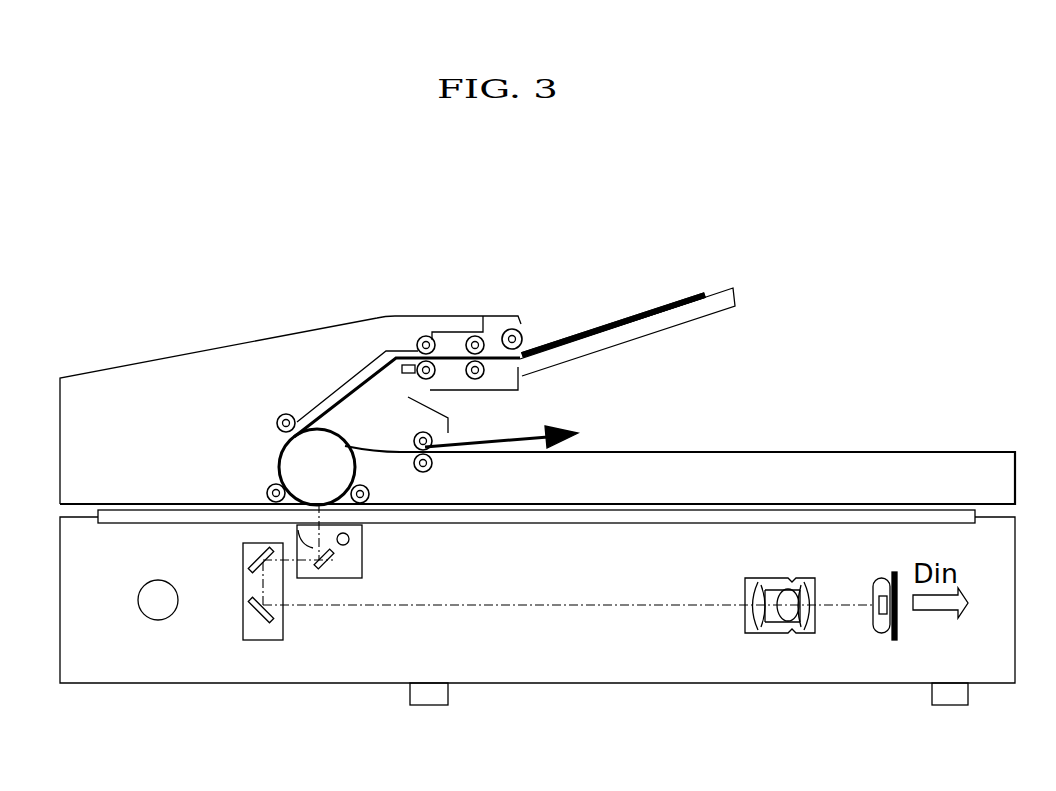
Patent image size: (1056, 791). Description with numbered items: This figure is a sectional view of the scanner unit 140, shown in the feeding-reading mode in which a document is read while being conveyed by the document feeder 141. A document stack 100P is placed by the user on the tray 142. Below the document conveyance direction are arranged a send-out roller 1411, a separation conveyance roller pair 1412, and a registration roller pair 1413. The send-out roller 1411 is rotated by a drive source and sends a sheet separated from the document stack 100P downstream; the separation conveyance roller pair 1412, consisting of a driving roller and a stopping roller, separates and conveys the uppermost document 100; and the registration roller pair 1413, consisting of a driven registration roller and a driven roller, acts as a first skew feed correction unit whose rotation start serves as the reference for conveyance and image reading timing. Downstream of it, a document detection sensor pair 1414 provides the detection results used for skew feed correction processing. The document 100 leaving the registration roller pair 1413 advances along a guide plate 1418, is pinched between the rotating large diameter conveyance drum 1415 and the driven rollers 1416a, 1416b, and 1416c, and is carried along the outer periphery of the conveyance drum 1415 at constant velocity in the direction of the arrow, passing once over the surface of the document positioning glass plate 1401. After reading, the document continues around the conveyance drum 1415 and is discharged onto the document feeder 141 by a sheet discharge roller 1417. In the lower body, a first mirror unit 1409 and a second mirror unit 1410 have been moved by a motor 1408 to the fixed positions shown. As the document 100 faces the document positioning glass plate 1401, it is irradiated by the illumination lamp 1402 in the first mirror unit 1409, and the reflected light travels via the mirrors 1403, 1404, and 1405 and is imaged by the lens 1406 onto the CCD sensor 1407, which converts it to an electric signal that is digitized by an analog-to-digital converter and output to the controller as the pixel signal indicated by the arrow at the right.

The document 100 is at (622, 319).
The document stack 100P is at (705, 293).
The scanner unit 140 is at (147, 684).
The document feeder 141 is at (713, 451).
The tray 142 is at (738, 297).
The document positioning glass plate 1401 is at (122, 509).
The illumination lamp 1402 is at (350, 539).
The mirror 1403 is at (333, 558).
The mirror 1404 is at (250, 556).
The mirror 1405 is at (282, 621).
The lens 1406 is at (777, 637).
The CCD sensor 1407 is at (900, 637).
The motor 1408 is at (158, 620).
The first mirror unit 1409 is at (338, 578).
The second mirror unit 1410 is at (272, 641).
The send-out roller 1411 is at (520, 333).
The separation conveyance roller pair 1412 is at (474, 336).
The registration roller pair 1413 is at (424, 336).
The document detection sensor pair 1414 is at (402, 372).
The conveyance drum 1415 is at (282, 454).
The driven roller 1416a is at (287, 413).
The driven roller 1416b is at (268, 488).
The driven roller 1416c is at (370, 494).
The sheet discharge roller 1417 is at (431, 437).
The guide plate 1418 is at (364, 366).